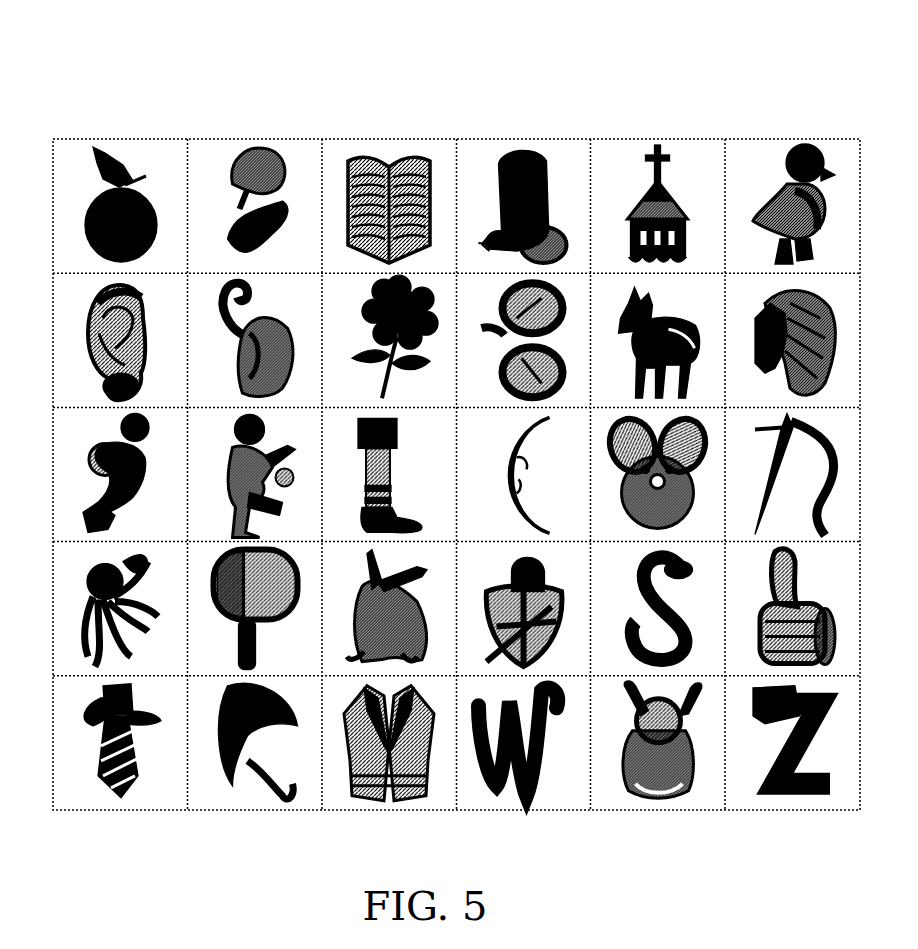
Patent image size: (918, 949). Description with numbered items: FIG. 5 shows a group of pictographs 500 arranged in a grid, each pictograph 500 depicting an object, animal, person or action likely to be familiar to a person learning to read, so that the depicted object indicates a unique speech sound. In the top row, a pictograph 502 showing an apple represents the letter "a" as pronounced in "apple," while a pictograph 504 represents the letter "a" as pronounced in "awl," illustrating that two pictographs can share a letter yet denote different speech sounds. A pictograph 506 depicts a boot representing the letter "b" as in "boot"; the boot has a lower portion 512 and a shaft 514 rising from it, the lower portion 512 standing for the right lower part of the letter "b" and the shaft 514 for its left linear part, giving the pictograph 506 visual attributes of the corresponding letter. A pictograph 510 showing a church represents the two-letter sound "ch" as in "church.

The pictographs 500 is at (458, 24).
The pictograph 502 is at (125, 160).
The pictograph 504 is at (262, 152).
The pictograph 506 is at (517, 153).
The shaft 514 is at (543, 190).
The lower portion 512 is at (560, 232).
The pictograph 510 is at (683, 207).